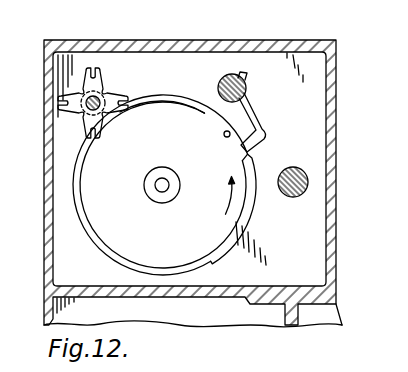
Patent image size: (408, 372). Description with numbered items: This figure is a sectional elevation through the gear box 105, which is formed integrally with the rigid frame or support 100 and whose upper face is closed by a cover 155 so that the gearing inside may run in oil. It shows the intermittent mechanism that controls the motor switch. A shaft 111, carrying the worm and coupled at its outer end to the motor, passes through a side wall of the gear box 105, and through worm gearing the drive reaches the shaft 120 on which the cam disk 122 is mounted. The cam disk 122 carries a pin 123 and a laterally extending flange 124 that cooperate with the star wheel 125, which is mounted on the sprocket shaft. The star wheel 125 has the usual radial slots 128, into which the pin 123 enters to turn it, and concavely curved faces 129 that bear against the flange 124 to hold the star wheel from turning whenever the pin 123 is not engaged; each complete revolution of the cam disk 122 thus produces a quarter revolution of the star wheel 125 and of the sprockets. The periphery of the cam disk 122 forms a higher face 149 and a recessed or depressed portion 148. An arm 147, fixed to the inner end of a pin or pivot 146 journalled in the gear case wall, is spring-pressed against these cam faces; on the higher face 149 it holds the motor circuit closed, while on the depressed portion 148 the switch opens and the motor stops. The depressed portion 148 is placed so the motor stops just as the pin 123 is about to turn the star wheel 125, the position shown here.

The frame or support 100 is at (211, 173).
The gear box 105 is at (193, 183).
The shaft 111 is at (308, 182).
The shaft 120 is at (162, 186).
The cam disk 122 is at (181, 175).
The pin 123 is at (226, 138).
The laterally extending flange 124 is at (100, 229).
The star wheel 125 is at (105, 88).
The radial slots 128 is at (95, 72).
The concavely curved faces 129 is at (72, 68).
The pin or pivot 146 is at (247, 87).
The arm 147 is at (262, 118).
The recessed or depressed portion 148 is at (251, 214).
The higher face 149 is at (187, 100).
The cover 155 is at (290, 43).